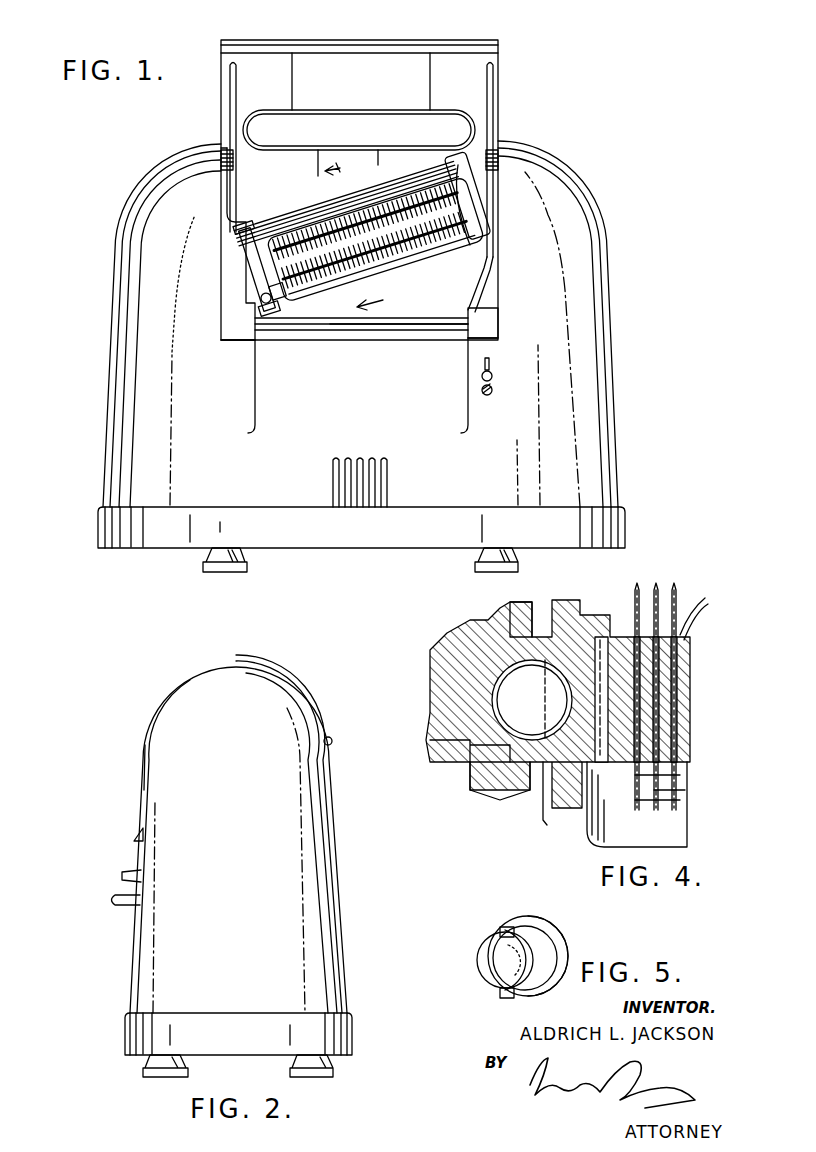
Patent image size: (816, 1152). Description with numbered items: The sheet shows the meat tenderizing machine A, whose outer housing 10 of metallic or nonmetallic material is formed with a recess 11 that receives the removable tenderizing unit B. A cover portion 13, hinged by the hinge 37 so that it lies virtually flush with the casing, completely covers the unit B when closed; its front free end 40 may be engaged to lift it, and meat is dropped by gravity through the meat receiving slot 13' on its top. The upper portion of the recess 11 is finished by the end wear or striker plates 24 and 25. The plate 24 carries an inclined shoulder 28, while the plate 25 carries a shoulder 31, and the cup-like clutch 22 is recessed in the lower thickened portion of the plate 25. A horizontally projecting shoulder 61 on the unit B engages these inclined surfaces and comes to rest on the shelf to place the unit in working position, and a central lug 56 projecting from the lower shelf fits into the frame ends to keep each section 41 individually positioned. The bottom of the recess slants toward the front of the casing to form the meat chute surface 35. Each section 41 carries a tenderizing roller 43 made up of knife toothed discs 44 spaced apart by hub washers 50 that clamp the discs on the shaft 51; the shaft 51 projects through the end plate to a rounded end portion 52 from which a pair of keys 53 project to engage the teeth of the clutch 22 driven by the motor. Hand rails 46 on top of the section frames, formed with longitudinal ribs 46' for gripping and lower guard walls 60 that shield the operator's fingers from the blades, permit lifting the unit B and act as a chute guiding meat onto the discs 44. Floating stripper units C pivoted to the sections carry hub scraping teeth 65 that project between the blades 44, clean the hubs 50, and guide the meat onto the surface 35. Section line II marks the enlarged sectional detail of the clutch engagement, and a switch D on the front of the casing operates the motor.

In FIG. 1, the outer housing 10 is at (598, 196).
In FIG. 2, the outer housing 10 is at (150, 798).
In FIG. 1, the recess 11 is at (262, 330).
In FIG. 1, the cover portion 13 is at (359, 172).
In FIG. 2, the cover portion 13 is at (112, 748).
In FIG. 1, the meat receiving slot 13' is at (359, 112).
In FIG. 4, the clutch 22 is at (558, 799).
In FIG. 1, the end wear plate 24 is at (495, 166).
In FIG. 1, the end wear plate 25 is at (226, 170).
In FIG. 1, the inclined shoulder 28 is at (486, 256).
In FIG. 1, the shoulder 31 is at (262, 262).
In FIG. 1, the meat chute surface 35 is at (285, 378).
In FIG. 2, the hinge 37 is at (331, 738).
In FIG. 2, the front free end 40 is at (136, 835).
In FIG. 1, the section 41 is at (255, 248).
In FIG. 4, the section 41 is at (578, 612).
In FIG. 1, the tenderizing roller 43 is at (312, 332).
In FIG. 4, the knife toothed disc 44 is at (645, 595).
In FIG. 1, the hand rail 46 is at (312, 153).
In FIG. 1, the longitudinal rib 46' is at (382, 148).
In FIG. 1, the hub washer 50 is at (418, 265).
In FIG. 4, the hub washer 50 is at (709, 613).
In FIG. 4, the shaft 51 is at (683, 700).
In FIG. 5, the shaft 51 is at (540, 935).
In FIG. 1, the rounded end portion 52 is at (258, 272).
In FIG. 4, the rounded end portion 52 is at (465, 750).
In FIG. 5, the rounded end portion 52 is at (478, 960).
In FIG. 1, the key 53 is at (268, 298).
In FIG. 4, the key 53 is at (515, 608).
In FIG. 5, the key 53 is at (500, 928).
In FIG. 1, the central lug 56 is at (465, 318).
In FIG. 1, the lower guard wall 60 is at (290, 205).
In FIG. 1, the horizontally projecting shoulder 61 is at (237, 222).
In FIG. 4, the hub scraping teeth 65 is at (682, 785).
In FIG. 1, the meat tenderizing machine A is at (585, 415).
In FIG. 2, the meat tenderizing machine A is at (147, 947).
In FIG. 1, the tenderizing unit B is at (470, 208).
In FIG. 1, the floating stripper unit C is at (342, 300).
In FIG. 4, the floating stripper unit C is at (684, 825).
In FIG. 1, the switch D is at (493, 368).
In FIG. 2, the switch D is at (120, 874).
In FIG. 1, the section line II is at (363, 234).